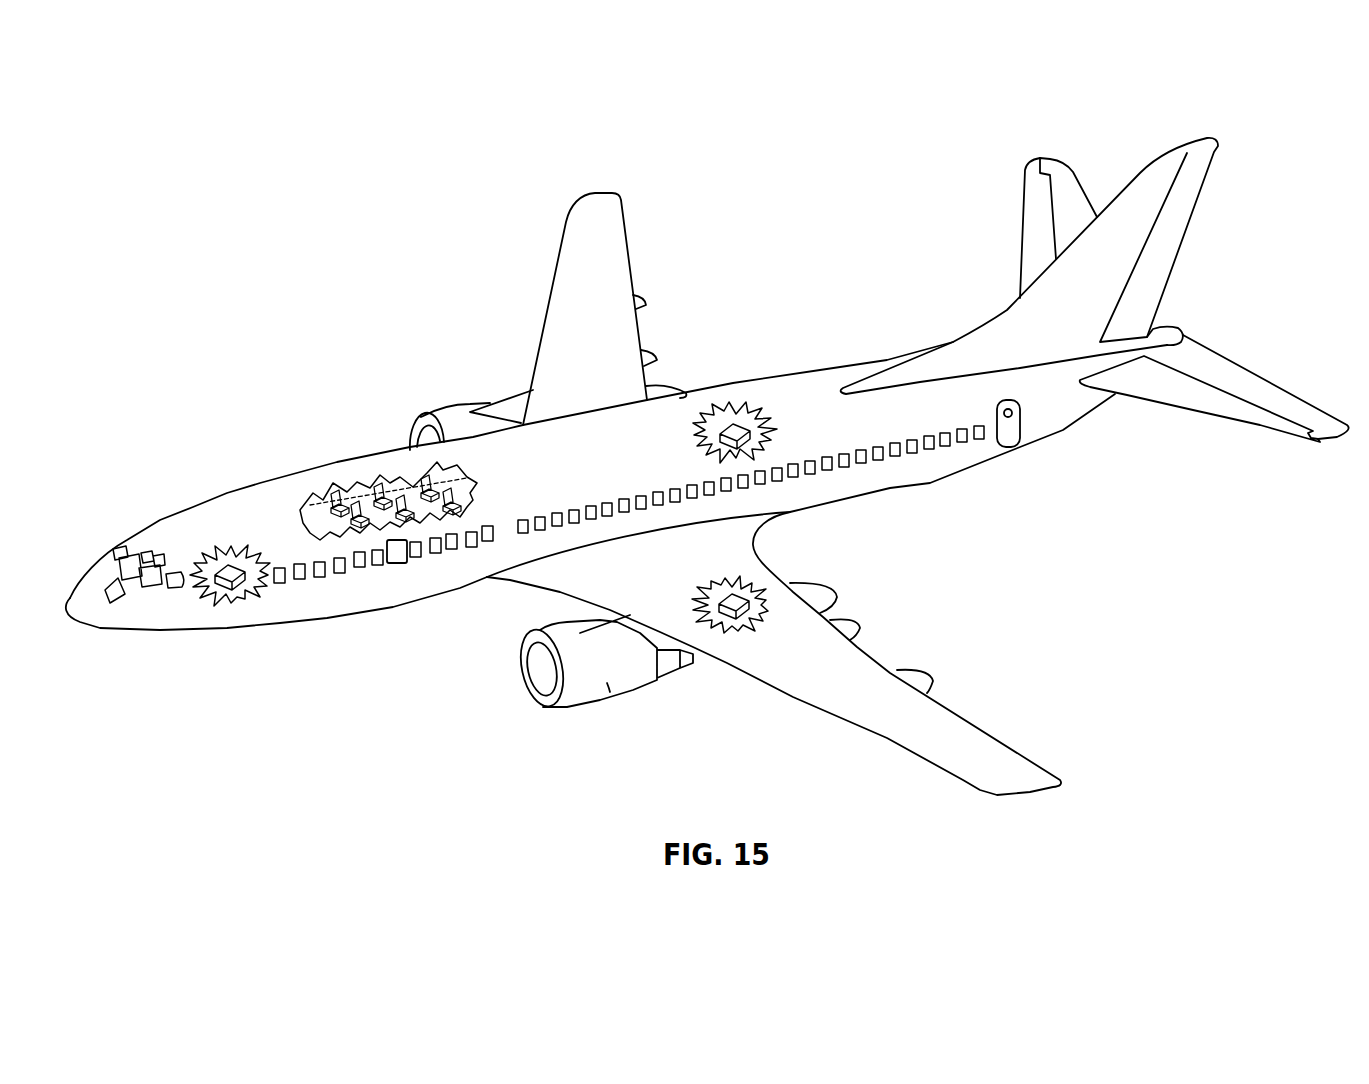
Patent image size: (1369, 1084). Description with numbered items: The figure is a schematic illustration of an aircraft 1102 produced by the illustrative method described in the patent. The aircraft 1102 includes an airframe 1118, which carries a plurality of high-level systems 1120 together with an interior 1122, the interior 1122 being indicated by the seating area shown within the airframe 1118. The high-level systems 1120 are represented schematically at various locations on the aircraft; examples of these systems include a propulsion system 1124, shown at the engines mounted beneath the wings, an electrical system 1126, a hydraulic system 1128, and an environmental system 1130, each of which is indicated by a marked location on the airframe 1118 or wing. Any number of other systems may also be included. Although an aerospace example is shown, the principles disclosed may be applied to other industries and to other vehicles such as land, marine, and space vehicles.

The aircraft 1102 is at (190, 340).
The airframe 1118 is at (333, 458).
The high-level systems 1120 is at (1097, 604).
The interior 1122 is at (372, 527).
The propulsion system 1124 is at (453, 410).
The electrical system 1126 is at (228, 572).
The hydraulic system 1128 is at (735, 595).
The environmental system 1130 is at (730, 430).